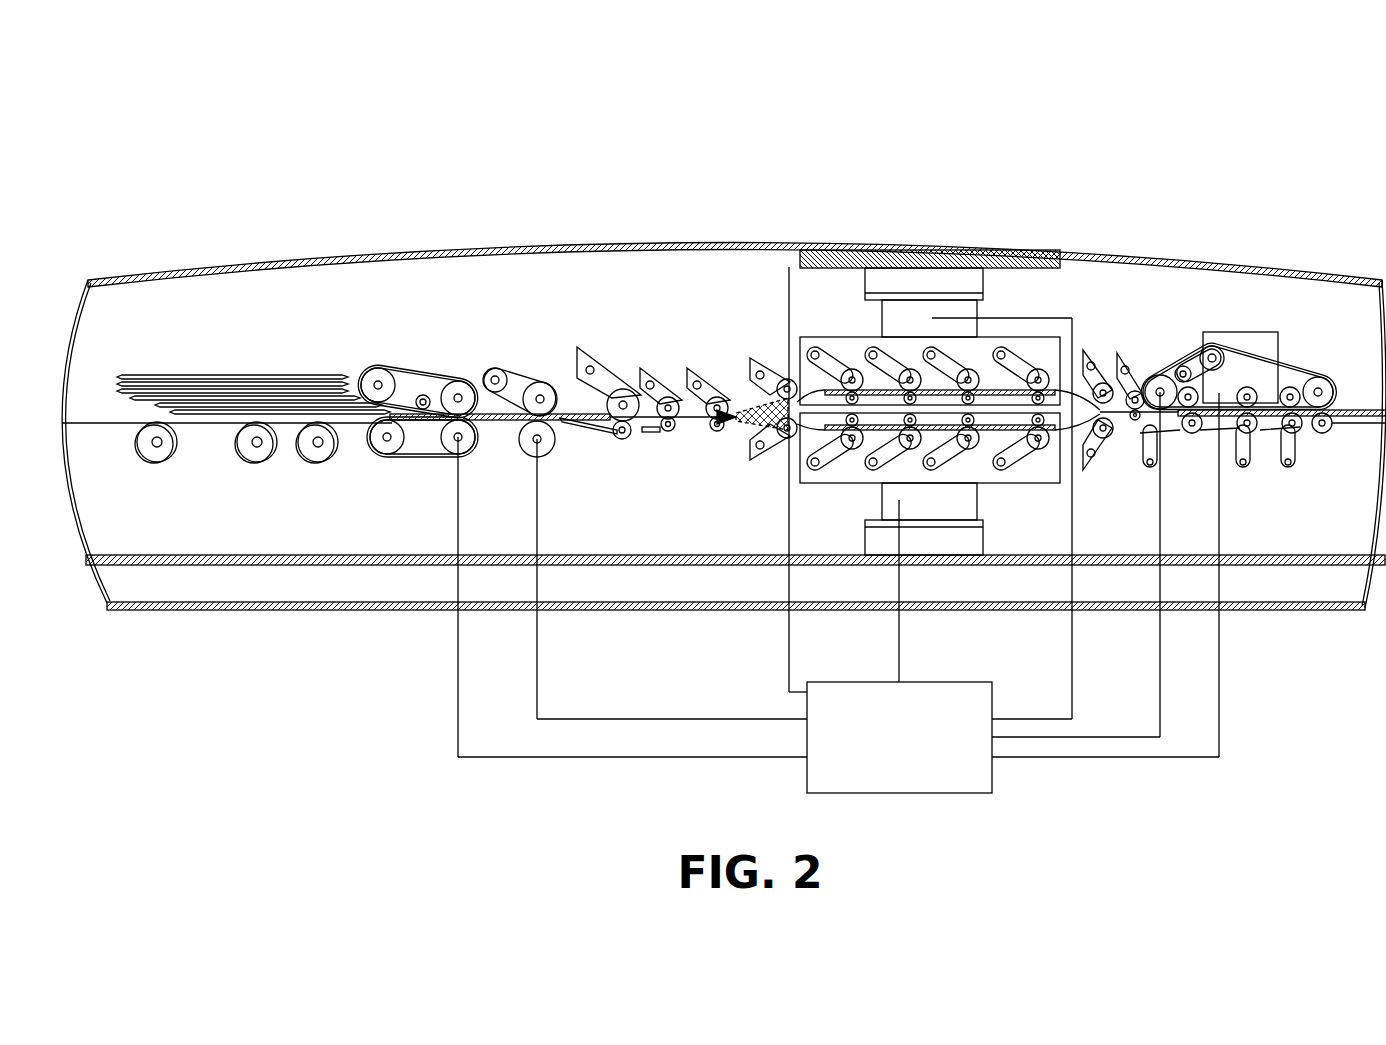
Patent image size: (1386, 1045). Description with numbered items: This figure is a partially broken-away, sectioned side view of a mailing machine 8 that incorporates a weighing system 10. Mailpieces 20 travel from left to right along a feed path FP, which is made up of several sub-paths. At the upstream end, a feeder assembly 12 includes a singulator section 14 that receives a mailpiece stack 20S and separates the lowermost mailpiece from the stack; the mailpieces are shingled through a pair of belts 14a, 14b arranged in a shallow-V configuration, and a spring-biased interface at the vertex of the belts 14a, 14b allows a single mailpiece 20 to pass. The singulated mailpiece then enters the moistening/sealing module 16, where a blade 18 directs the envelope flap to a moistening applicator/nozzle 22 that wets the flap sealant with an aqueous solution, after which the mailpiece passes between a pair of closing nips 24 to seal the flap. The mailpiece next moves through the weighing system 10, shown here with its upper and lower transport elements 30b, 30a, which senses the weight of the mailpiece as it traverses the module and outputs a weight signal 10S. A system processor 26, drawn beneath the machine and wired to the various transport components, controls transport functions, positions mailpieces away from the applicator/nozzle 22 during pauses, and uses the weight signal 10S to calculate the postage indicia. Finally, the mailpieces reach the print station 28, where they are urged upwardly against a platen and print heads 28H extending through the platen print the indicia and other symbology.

The mailing machine 8 is at (1105, 193).
The weighing system 10 is at (944, 416).
The weight signal 10S is at (899, 634).
The feeder assembly 12 is at (227, 332).
The singulator section 14 is at (573, 484).
The belt 14a is at (426, 378).
The belt 14b is at (427, 457).
The moistening/sealing module 16 is at (640, 405).
The blade 18 is at (605, 432).
The mailpiece 20 is at (490, 423).
The mailpiece stack 20S is at (242, 375).
The moistening applicator/nozzle 22 is at (652, 433).
The closing nips 24 is at (675, 424).
The system processor 26 is at (806, 711).
The print station 28 is at (1189, 484).
The print heads 28H is at (1278, 355).
The lower roller belt 30a is at (993, 422).
The upper roller belt 30b is at (842, 383).
The feed path FP is at (713, 412).